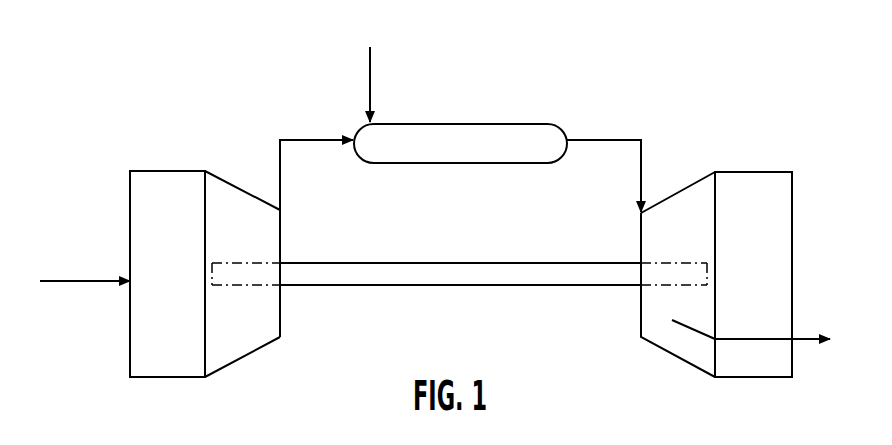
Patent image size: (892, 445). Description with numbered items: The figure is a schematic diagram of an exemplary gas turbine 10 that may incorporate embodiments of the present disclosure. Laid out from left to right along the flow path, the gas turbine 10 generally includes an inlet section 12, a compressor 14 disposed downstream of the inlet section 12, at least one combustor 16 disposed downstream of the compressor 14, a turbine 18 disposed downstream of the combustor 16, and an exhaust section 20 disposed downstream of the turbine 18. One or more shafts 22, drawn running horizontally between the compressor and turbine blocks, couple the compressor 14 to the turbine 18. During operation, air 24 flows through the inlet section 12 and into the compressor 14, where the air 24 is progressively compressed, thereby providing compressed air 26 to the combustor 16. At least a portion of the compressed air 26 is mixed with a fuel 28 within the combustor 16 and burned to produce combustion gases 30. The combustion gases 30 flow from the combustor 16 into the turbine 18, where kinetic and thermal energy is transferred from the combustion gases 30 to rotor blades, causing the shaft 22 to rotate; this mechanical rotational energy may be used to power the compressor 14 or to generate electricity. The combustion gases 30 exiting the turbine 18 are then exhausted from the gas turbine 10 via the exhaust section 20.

The gas turbine 10 is at (323, 70).
The inlet section 12 is at (156, 171).
The compressor 14 is at (240, 190).
The combustor 16 is at (513, 124).
The turbine 18 is at (700, 180).
The exhaust section 20 is at (782, 172).
The shaft 22 is at (428, 285).
The air 24 is at (93, 280).
The compressed air 26 is at (315, 140).
The fuel 28 is at (370, 90).
The combustion gases 30 is at (588, 142).